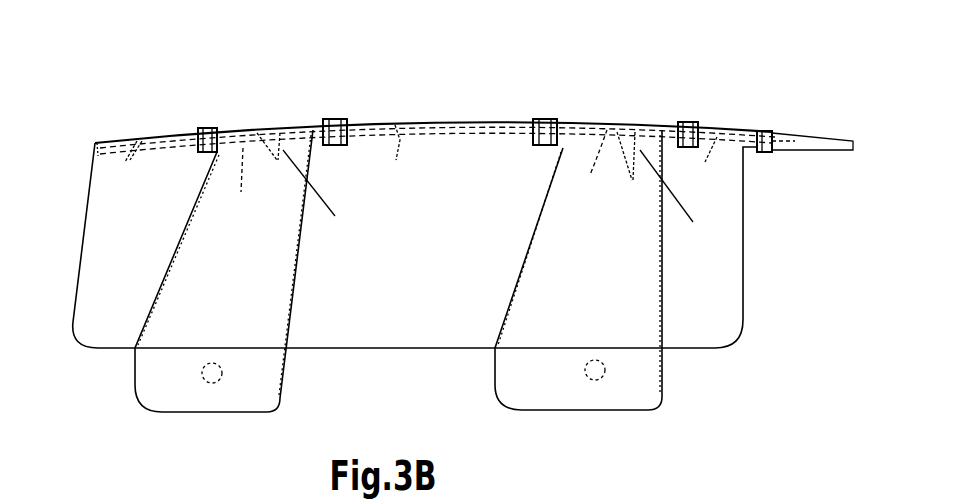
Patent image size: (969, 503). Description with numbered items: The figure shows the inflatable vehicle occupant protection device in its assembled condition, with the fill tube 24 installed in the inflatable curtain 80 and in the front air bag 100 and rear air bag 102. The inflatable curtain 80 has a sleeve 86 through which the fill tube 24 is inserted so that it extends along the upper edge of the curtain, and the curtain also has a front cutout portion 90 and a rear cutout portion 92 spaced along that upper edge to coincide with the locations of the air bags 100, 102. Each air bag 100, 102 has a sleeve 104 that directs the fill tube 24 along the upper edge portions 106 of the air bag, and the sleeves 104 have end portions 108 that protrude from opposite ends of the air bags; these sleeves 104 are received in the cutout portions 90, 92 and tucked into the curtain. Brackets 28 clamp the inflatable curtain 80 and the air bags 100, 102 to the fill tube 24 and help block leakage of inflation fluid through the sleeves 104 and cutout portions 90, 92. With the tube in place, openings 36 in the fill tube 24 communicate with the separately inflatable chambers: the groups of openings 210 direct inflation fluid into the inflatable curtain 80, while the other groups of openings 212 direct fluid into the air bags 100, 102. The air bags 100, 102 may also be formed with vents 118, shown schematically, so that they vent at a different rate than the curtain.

The fill tube 24 is at (828, 142).
The brackets 28 is at (350, 118).
The openings 36 is at (126, 164).
The inflatable curtain 80 is at (390, 310).
The sleeve 86 is at (782, 150).
The front cutout portion 90 is at (237, 184).
The rear cutout portion 92 is at (592, 167).
The front air bag 100 is at (172, 390).
The rear air bag 102 is at (542, 392).
The sleeve 104 is at (322, 125).
The upper edge portions 106 is at (263, 126).
The end portions 108 is at (200, 128).
The vents 118 is at (216, 382).
The groups of openings 210 is at (148, 158).
The groups of openings 212 is at (501, 199).